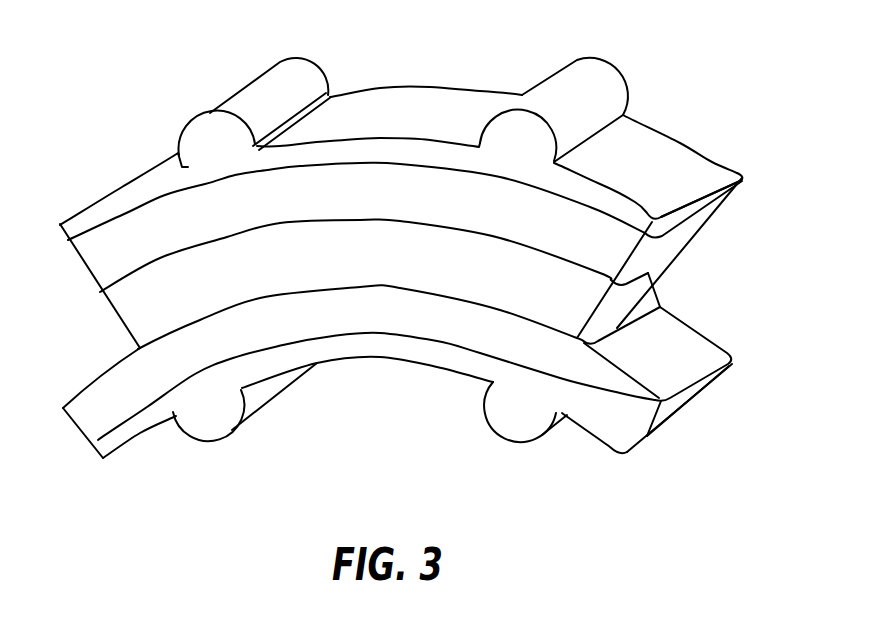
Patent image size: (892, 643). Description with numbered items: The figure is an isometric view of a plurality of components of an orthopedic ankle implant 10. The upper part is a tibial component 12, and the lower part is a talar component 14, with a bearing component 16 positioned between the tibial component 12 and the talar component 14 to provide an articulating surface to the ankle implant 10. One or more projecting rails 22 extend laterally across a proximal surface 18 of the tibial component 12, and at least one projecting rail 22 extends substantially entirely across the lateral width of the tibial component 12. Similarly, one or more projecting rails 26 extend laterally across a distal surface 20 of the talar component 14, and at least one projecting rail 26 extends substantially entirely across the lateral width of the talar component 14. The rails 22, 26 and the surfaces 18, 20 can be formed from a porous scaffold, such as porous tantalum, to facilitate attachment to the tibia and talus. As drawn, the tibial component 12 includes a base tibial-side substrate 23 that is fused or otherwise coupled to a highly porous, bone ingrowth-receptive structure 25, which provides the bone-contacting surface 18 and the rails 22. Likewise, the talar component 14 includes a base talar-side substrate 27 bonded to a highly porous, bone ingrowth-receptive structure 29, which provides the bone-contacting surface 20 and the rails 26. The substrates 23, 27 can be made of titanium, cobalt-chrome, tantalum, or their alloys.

The ankle implant 10 is at (90, 58).
The tibial component 12 is at (47, 230).
The talar component 14 is at (57, 410).
The bearing component 16 is at (127, 310).
The proximal surface 18 is at (417, 102).
The distal surface 20 is at (435, 365).
The projecting rails 22 is at (257, 97).
The base tibial-side substrate 23 is at (690, 238).
The bone ingrowth-receptive structure 25 is at (703, 163).
The projecting rails 26 is at (210, 423).
The base talar-side substrate 27 is at (705, 353).
The bone ingrowth-receptive structure 29 is at (600, 422).